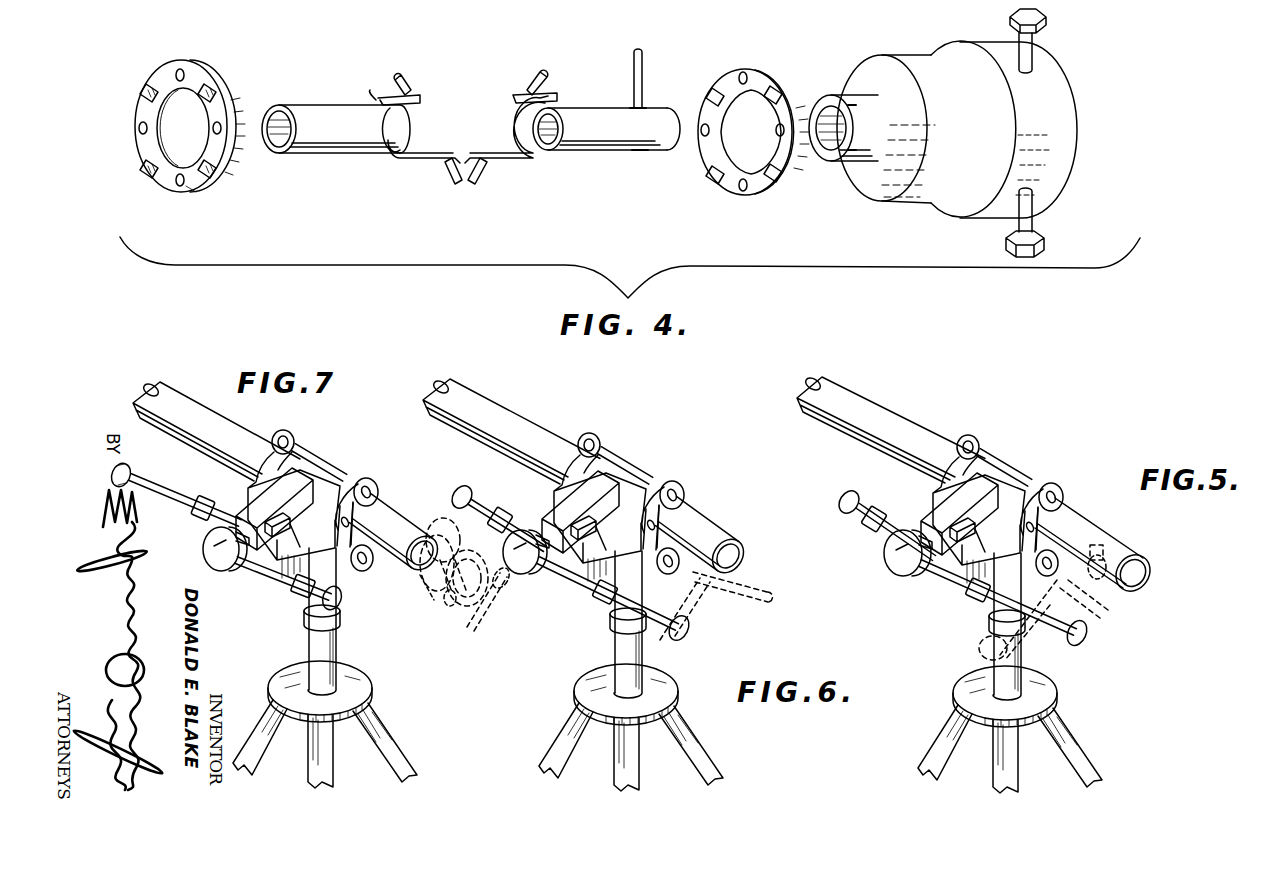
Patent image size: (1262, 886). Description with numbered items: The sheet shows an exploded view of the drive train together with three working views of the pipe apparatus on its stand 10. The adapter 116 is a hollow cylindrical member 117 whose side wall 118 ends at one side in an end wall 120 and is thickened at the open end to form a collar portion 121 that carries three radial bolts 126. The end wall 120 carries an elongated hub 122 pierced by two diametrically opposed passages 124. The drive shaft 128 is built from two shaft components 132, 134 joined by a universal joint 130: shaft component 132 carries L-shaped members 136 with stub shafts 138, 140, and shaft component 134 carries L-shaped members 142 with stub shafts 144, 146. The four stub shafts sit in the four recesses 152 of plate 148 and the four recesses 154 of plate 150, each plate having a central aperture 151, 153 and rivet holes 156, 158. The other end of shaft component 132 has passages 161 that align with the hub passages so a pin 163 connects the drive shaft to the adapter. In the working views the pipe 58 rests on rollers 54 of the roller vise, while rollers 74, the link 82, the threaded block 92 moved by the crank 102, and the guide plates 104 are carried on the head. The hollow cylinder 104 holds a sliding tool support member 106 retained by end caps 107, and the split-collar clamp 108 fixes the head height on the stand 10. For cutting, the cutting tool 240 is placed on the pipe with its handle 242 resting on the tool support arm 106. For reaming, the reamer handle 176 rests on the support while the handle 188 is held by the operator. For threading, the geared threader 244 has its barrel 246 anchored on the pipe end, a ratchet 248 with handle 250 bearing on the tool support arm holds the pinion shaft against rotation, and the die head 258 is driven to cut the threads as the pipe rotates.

In FIG. 5, the stand 10 is at (1072, 700).
In FIG. 6, the stand 10 is at (557, 698).
In FIG. 7, the stand 10 is at (394, 707).
In FIG. 5, the rollers 54 is at (1047, 575).
In FIG. 6, the rollers 54 is at (668, 568).
In FIG. 7, the rollers 54 is at (364, 572).
In FIG. 5, the pipe 58 is at (882, 412).
In FIG. 6, the pipe 58 is at (507, 410).
In FIG. 7, the pipe 58 is at (198, 408).
In FIG. 5, the rollers 74 is at (976, 443).
In FIG. 6, the rollers 74 is at (598, 440).
In FIG. 7, the rollers 74 is at (293, 446).
In FIG. 5, the link 82 is at (942, 500).
In FIG. 6, the link 82 is at (587, 502).
In FIG. 7, the link 82 is at (272, 506).
In FIG. 5, the block 92 is at (926, 512).
In FIG. 6, the block 92 is at (536, 508).
In FIG. 5, the crank 102 is at (880, 553).
In FIG. 6, the crank 102 is at (506, 546).
In FIG. 7, the crank 102 is at (203, 548).
In FIG. 5, the hollow cylinder 104 is at (950, 578).
In FIG. 6, the hollow cylinder 104 is at (608, 593).
In FIG. 7, the hollow cylinder 104 is at (272, 577).
In FIG. 5, the tool support member 106 is at (858, 521).
In FIG. 6, the tool support member 106 is at (478, 497).
In FIG. 7, the tool support member 106 is at (170, 493).
In FIG. 5, the end caps 107 is at (843, 493).
In FIG. 6, the end caps 107 is at (455, 486).
In FIG. 7, the end caps 107 is at (128, 470).
In FIG. 5, the clamp 108 is at (990, 616).
In FIG. 6, the clamp 108 is at (612, 624).
In FIG. 7, the clamp 108 is at (303, 618).
In FIG. 4, the adapter 116 is at (955, 128).
In FIG. 4, the cylindrical member 117 is at (923, 70).
In FIG. 4, the side wall 118 is at (888, 133).
In FIG. 4, the end wall 120 is at (843, 156).
In FIG. 4, the collar portion 121 is at (1058, 82).
In FIG. 4, the hub 122 is at (828, 160).
In FIG. 4, the passages 124 is at (849, 100).
In FIG. 4, the bolts 126 is at (1046, 18).
In FIG. 4, the drive shaft 128 is at (417, 97).
In FIG. 4, the universal joint 130 is at (533, 97).
In FIG. 4, the shaft component 132 is at (612, 115).
In FIG. 4, the shaft component 134 is at (338, 150).
In FIG. 4, the L-shaped members 136 is at (550, 100).
In FIG. 4, the stub shaft 138 is at (528, 80).
In FIG. 4, the stub shaft 140 is at (482, 170).
In FIG. 4, the L-shaped members 142 is at (430, 152).
In FIG. 4, the stub shaft 144 is at (410, 84).
In FIG. 4, the stub shaft 146 is at (446, 172).
In FIG. 4, the plate 148 is at (190, 190).
In FIG. 4, the plate 150 is at (730, 196).
In FIG. 4, the aperture 151 is at (238, 126).
In FIG. 4, the recesses 152 is at (146, 84).
In FIG. 4, the aperture 153 is at (752, 128).
In FIG. 4, the recesses 154 is at (714, 88).
In FIG. 4, the holes 156 is at (180, 70).
In FIG. 4, the holes 158 is at (744, 72).
In FIG. 4, the passages 161 is at (642, 107).
In FIG. 4, the pin 163 is at (643, 56).
In FIG. 6, the handle 176 is at (698, 598).
In FIG. 6, the handle 188 is at (763, 573).
In FIG. 5, the cutting tool 240 is at (1106, 616).
In FIG. 5, the handle 242 is at (977, 640).
In FIG. 7, the geared threader 244 is at (404, 590).
In FIG. 7, the barrel 246 is at (430, 518).
In FIG. 6, the ratchet 248 is at (505, 588).
In FIG. 6, the handle 250 is at (484, 620).
In FIG. 6, the die head 258 is at (448, 624).
In FIG. 7, the die head 258 is at (452, 620).